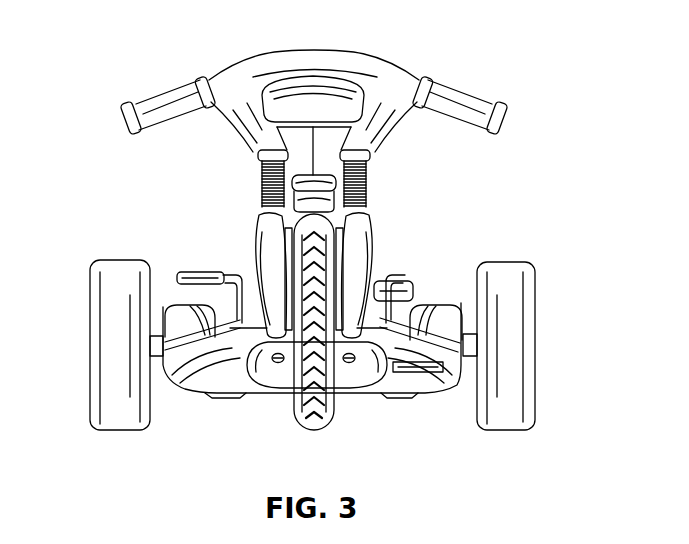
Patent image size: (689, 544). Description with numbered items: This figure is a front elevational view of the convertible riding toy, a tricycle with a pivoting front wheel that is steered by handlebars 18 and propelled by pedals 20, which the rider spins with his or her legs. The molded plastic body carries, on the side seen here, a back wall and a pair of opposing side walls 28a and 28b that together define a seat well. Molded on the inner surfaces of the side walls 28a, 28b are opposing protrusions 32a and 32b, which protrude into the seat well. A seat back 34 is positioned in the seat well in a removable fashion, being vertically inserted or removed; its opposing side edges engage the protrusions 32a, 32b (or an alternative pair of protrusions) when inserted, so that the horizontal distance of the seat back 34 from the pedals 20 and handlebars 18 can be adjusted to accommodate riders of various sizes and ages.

The handlebars 18 is at (360, 62).
The pedals 20 is at (203, 272).
The side wall 28a is at (178, 310).
The side wall 28b is at (447, 306).
The protrusion 32a is at (205, 308).
The protrusion 32b is at (423, 304).
The seat back 34 is at (382, 283).